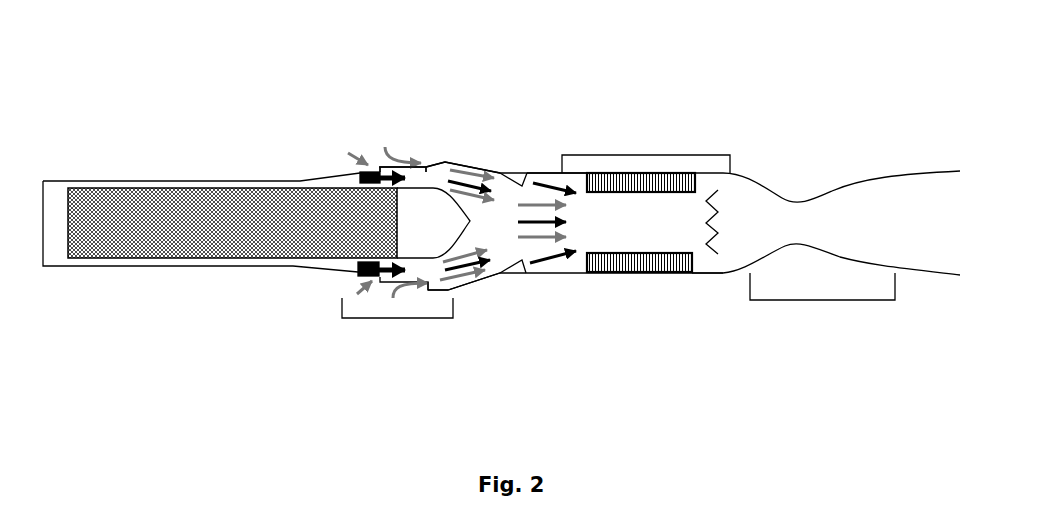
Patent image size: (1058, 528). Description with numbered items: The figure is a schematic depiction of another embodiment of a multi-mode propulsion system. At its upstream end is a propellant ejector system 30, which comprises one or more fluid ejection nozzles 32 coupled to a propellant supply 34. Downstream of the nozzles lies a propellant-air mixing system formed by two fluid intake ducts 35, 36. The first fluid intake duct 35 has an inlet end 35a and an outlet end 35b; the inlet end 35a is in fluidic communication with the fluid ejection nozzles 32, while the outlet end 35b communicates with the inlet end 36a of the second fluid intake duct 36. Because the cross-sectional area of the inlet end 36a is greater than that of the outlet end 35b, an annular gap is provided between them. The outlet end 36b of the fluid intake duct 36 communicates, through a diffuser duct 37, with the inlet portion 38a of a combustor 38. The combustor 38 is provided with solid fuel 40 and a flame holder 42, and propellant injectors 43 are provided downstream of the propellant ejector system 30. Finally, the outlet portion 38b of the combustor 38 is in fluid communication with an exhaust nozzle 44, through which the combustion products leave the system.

The propellant ejector system 30 is at (390, 318).
The fluid ejection nozzles 32 is at (357, 276).
The propellant supply 34 is at (107, 232).
The fluid intake duct 35 is at (395, 167).
The inlet end 35a is at (379, 167).
The outlet end 35b is at (426, 167).
The fluid intake duct 36 is at (437, 290).
The inlet end 36a is at (428, 290).
The outlet end 36b is at (450, 295).
The diffuser duct 37 is at (460, 162).
The combustor 38 is at (643, 155).
The inlet portion 38a is at (535, 172).
The outlet portion 38b is at (713, 273).
The solid fuel 40 is at (648, 258).
The flame holder 42 is at (712, 212).
The propellant injectors 43 is at (527, 272).
The exhaust nozzle 44 is at (830, 300).